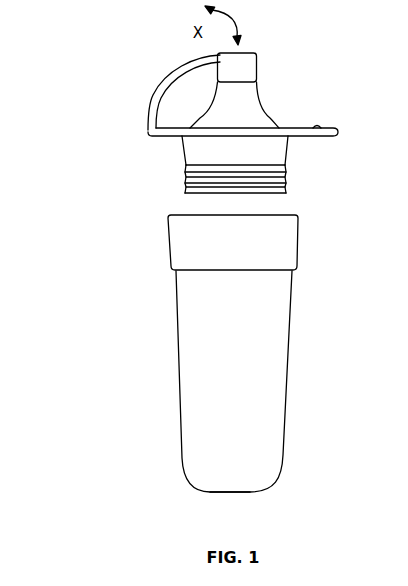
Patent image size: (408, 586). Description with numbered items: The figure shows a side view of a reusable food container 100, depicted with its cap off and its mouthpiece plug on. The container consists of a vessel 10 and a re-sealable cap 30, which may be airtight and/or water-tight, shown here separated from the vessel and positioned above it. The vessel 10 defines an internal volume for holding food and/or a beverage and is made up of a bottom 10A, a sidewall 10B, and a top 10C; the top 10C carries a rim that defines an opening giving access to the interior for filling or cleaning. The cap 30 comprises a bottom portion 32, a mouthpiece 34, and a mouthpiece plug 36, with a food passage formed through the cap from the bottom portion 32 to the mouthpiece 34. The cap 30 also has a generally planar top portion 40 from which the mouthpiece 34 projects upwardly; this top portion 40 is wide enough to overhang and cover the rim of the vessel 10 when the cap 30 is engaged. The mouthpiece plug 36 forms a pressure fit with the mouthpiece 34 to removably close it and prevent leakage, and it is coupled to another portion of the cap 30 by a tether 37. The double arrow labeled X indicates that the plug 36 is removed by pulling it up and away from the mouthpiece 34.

The reusable food container 100 is at (107, 60).
The vessel 10 is at (160, 213).
The bottom 10A is at (253, 492).
The sidewall 10B is at (287, 408).
The top 10C is at (297, 260).
The cap 30 is at (302, 66).
The bottom portion 32 is at (306, 188).
The mouthpiece 34 is at (258, 107).
The mouthpiece plug 36 is at (253, 70).
The tether 37 is at (150, 110).
The top portion 40 is at (337, 136).